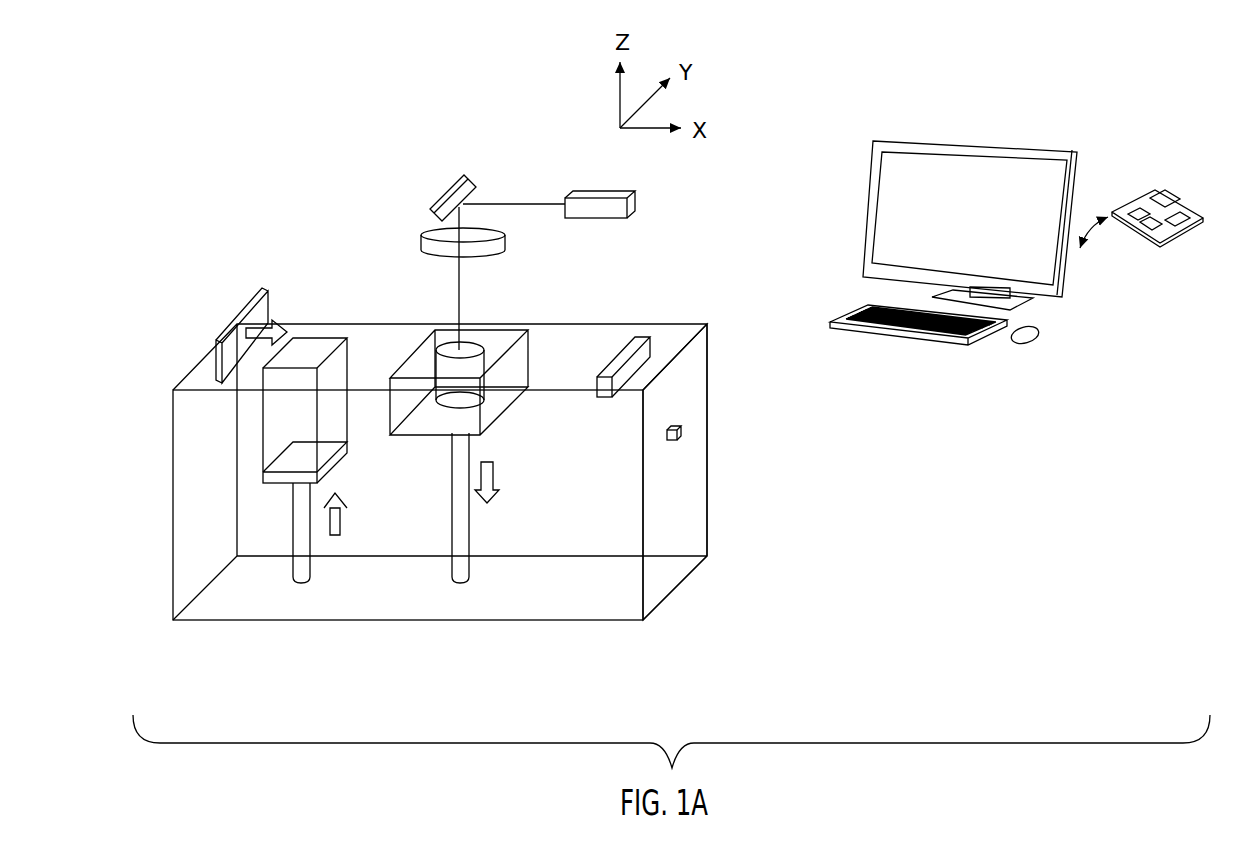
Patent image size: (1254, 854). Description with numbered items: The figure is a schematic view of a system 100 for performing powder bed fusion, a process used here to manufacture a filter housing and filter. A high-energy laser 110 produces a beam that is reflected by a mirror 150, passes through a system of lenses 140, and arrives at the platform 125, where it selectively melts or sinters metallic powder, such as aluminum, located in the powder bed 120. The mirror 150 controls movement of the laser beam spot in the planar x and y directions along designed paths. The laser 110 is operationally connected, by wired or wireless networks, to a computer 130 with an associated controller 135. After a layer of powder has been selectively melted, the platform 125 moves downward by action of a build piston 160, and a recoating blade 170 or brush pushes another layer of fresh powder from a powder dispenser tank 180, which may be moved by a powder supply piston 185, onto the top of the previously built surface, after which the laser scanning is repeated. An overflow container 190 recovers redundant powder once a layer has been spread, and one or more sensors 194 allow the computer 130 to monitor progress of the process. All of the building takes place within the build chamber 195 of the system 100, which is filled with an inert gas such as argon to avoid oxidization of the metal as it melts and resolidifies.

The system 100 is at (716, 598).
The laser 110 is at (642, 204).
The powder bed 120 is at (426, 343).
The platform 125 is at (506, 439).
The computer 130 is at (931, 346).
The controller 135 is at (1160, 252).
The system of lenses 140 is at (409, 240).
The mirror 150 is at (432, 197).
The build piston 160 is at (460, 590).
The recoating blade 170 is at (207, 358).
The powder dispenser tank 180 is at (261, 441).
The powder supply piston 185 is at (303, 586).
The overflow container 190 is at (643, 322).
The sensor 194 is at (691, 428).
The build chamber 195 is at (691, 497).